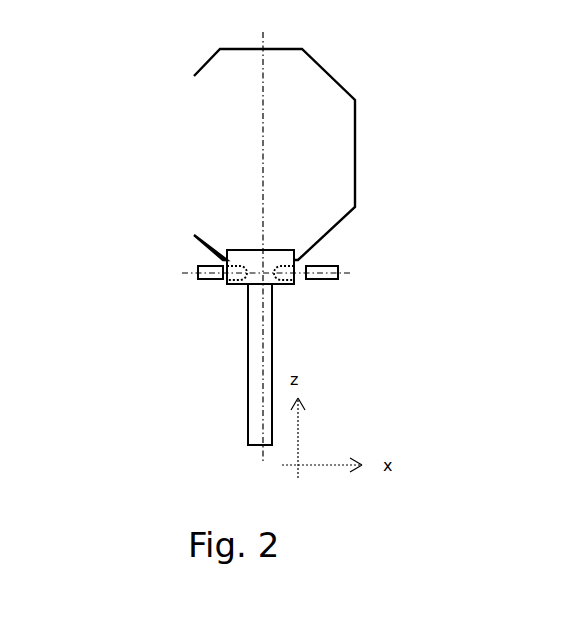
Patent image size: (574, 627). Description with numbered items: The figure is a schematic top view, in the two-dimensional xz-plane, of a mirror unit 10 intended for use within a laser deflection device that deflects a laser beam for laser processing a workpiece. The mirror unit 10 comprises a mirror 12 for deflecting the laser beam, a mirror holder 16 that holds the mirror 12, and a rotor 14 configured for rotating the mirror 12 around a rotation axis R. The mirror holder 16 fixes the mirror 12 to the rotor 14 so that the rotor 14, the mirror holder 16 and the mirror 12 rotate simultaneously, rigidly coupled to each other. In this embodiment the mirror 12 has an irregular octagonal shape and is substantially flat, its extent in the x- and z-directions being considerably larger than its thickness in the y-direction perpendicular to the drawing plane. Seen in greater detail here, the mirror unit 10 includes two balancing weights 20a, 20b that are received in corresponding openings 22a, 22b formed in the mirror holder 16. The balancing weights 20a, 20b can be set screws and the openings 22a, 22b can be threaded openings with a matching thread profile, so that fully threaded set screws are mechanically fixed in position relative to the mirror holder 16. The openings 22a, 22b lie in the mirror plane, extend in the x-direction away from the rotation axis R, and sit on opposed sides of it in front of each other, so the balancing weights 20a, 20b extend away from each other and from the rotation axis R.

The mirror unit 10 is at (190, 52).
The mirror 12 is at (205, 135).
The rotor 14 is at (258, 418).
The mirror holder 16 is at (283, 260).
The balancing weight 20a is at (207, 280).
The balancing weight 20b is at (328, 280).
The opening 22a is at (240, 285).
The opening 22b is at (285, 285).
The rotation axis R is at (263, 48).